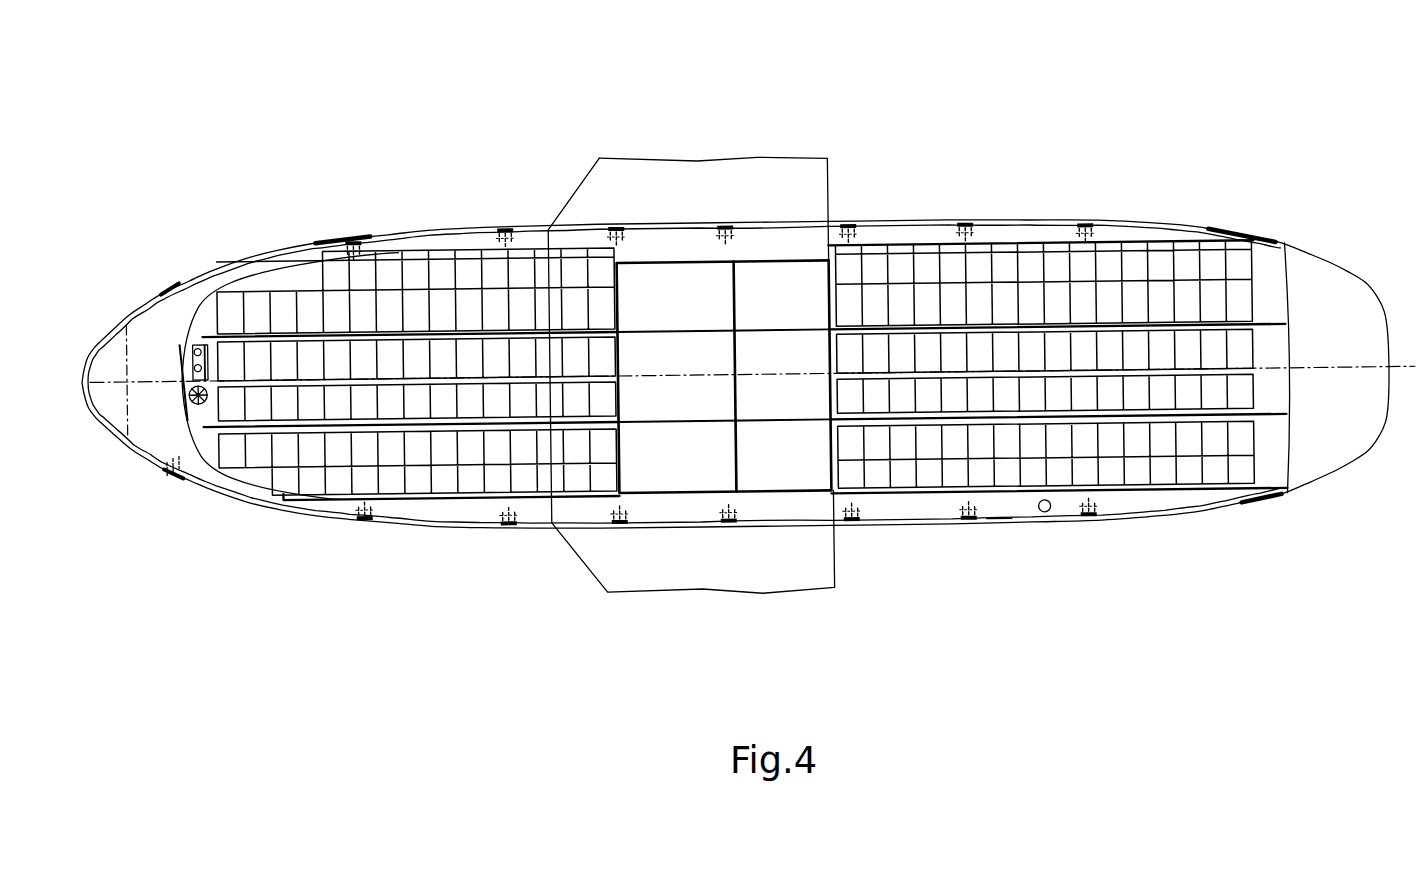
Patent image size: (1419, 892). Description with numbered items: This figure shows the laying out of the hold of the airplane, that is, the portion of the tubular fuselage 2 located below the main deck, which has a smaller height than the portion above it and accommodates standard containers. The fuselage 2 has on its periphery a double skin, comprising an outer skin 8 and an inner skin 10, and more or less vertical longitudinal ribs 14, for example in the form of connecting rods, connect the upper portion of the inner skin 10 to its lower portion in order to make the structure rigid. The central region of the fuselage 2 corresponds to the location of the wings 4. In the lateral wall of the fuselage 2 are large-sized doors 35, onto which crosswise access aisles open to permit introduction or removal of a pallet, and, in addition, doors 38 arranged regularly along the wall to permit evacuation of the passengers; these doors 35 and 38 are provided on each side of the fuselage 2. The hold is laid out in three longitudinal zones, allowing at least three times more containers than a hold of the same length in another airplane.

The fuselage 2 is at (1336, 251).
The wings 4 is at (712, 173).
The outer skin 8 is at (997, 525).
The inner skin 10 is at (1048, 517).
The longitudinal ribs 14 is at (1274, 421).
The door 35 is at (342, 228).
The doors 38 is at (618, 227).